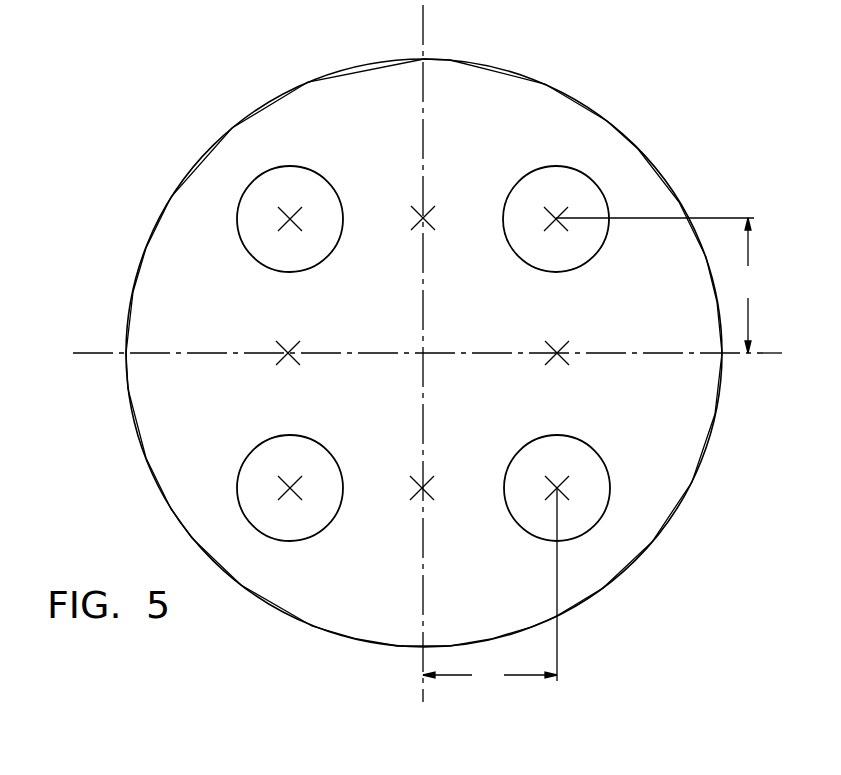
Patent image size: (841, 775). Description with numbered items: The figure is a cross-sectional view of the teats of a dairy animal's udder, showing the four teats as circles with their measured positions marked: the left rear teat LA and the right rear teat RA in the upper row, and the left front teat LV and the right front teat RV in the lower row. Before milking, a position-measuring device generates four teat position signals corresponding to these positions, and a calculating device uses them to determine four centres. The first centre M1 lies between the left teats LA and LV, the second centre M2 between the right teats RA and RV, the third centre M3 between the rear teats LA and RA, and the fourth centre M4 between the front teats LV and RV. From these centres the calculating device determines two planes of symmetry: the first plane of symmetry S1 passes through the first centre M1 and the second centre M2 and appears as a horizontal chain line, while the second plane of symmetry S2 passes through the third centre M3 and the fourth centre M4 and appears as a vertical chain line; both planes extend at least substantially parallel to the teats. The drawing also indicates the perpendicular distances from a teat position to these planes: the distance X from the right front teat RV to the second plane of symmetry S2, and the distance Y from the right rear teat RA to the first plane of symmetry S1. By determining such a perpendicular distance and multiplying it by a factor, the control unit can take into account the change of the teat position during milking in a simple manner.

The left rear teat LA is at (290, 167).
The right rear teat RA is at (557, 166).
The left front teat LV is at (290, 435).
The right front teat RV is at (557, 434).
The first centre M1 is at (288, 353).
The second centre M2 is at (557, 353).
The third centre M3 is at (426, 218).
The fourth centre M4 is at (426, 488).
The first plane of symmetry S1 is at (122, 393).
The second plane of symmetry S2 is at (478, 37).
The perpendicular distance X is at (490, 590).
The perpendicular distance Y is at (656, 285).